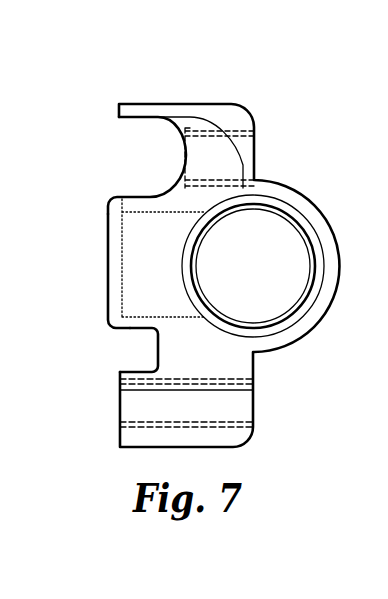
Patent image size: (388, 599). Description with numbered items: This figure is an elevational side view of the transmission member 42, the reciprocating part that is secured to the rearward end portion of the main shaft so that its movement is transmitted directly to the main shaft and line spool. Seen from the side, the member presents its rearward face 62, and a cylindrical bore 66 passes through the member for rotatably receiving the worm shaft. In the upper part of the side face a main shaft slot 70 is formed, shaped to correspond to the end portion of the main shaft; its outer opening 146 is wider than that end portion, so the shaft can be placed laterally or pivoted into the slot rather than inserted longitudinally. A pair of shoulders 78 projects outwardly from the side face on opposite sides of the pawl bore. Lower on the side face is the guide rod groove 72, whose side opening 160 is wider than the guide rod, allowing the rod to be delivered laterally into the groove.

The transmission member 42 is at (269, 123).
The main shaft slot 70 is at (143, 137).
The outer opening 146 is at (127, 158).
The shoulders 78 is at (108, 208).
The rearward face 62 is at (143, 247).
The guide rod groove 72 is at (130, 340).
The side opening 160 is at (128, 355).
The cylindrical bore 66 is at (270, 268).